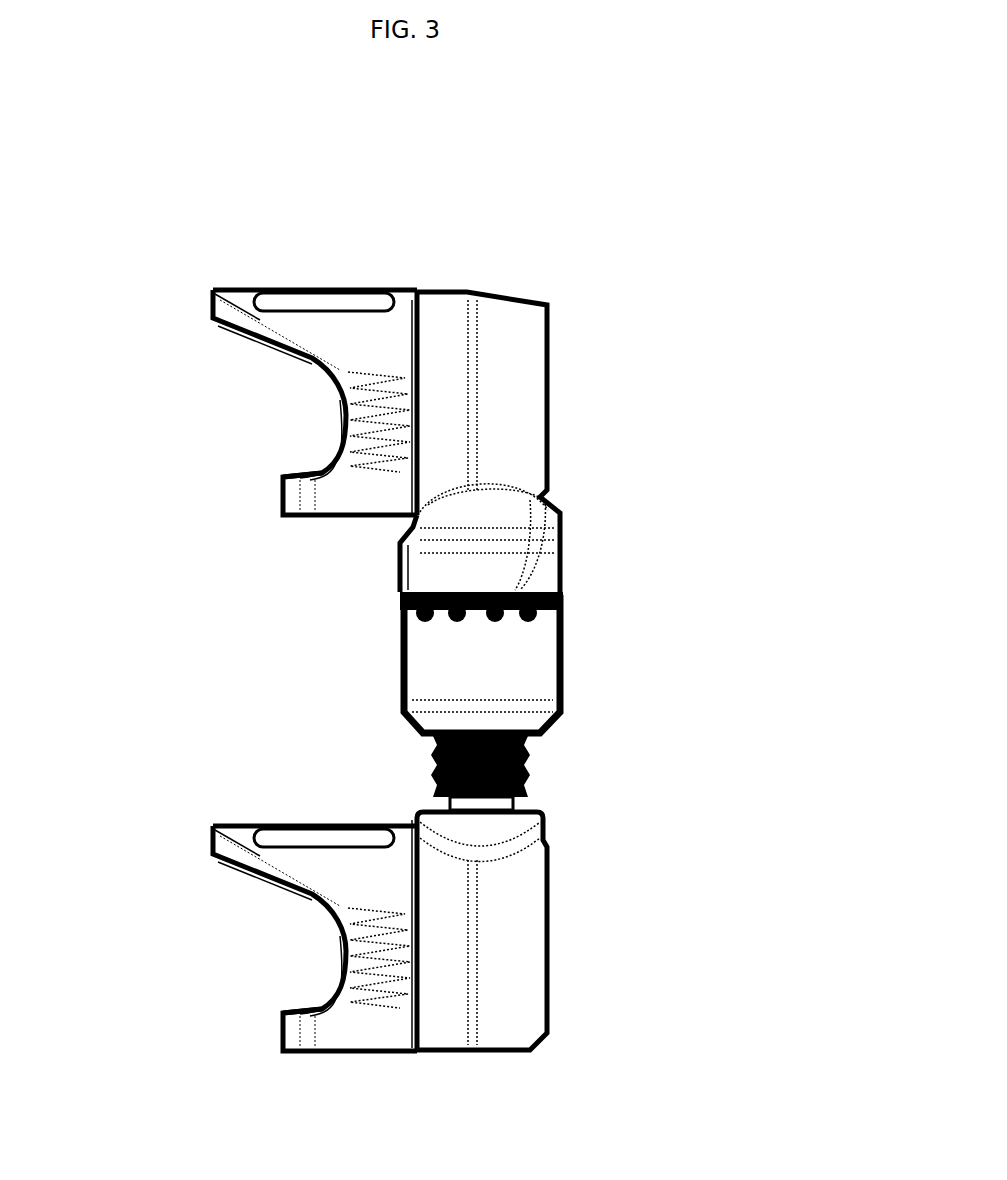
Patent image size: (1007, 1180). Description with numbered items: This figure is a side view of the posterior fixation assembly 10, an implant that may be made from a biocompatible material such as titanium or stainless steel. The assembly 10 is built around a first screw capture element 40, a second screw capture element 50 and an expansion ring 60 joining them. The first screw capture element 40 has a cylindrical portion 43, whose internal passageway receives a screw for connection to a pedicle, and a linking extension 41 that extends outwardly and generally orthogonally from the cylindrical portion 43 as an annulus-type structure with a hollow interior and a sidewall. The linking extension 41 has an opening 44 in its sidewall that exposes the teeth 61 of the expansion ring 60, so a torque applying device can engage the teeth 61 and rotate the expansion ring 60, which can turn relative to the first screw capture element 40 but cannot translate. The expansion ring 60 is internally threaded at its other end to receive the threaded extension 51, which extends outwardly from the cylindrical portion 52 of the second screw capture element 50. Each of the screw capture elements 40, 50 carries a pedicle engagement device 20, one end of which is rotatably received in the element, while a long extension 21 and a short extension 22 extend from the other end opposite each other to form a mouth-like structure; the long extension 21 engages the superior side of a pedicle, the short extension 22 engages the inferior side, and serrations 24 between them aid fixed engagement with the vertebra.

The posterior fixation assembly 10 is at (623, 147).
The pedicle engagement device 20 is at (357, 228).
The long extension 21 is at (240, 302).
The short extension 22 is at (283, 505).
The serrations 24 is at (358, 423).
The first screw capture element 40 is at (622, 387).
The linking extension 41 is at (430, 572).
The cylindrical portion 43 is at (500, 360).
The opening 44 is at (590, 552).
The second screw capture element 50 is at (600, 908).
The threaded extension 51 is at (530, 770).
The cylindrical portion 52 is at (505, 1007).
The expansion ring 60 is at (607, 671).
The teeth 61 is at (398, 608).